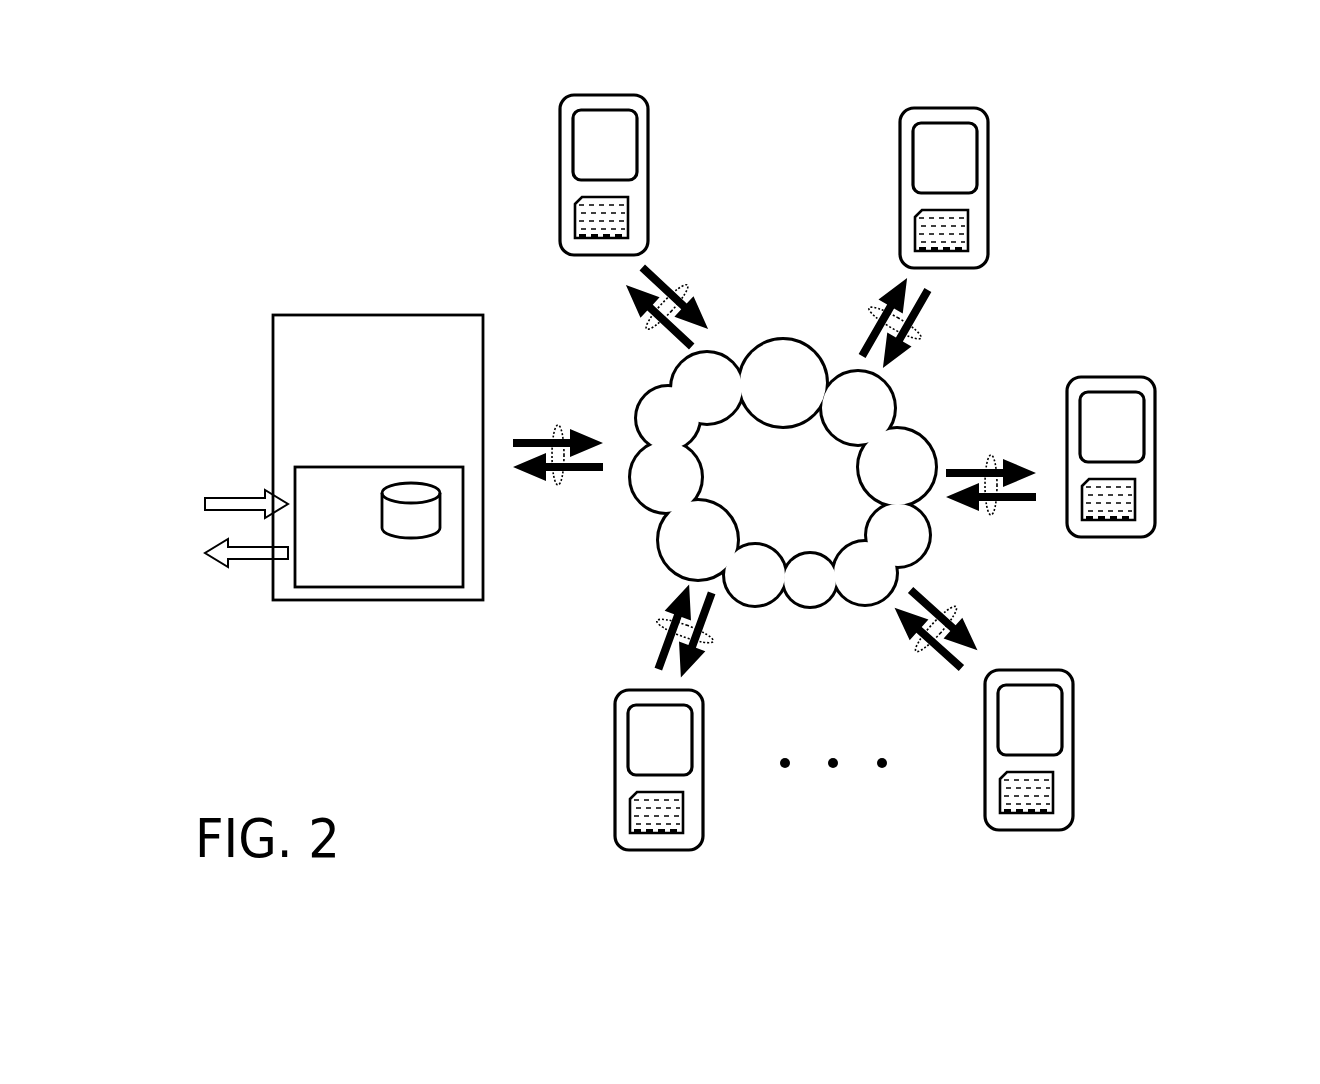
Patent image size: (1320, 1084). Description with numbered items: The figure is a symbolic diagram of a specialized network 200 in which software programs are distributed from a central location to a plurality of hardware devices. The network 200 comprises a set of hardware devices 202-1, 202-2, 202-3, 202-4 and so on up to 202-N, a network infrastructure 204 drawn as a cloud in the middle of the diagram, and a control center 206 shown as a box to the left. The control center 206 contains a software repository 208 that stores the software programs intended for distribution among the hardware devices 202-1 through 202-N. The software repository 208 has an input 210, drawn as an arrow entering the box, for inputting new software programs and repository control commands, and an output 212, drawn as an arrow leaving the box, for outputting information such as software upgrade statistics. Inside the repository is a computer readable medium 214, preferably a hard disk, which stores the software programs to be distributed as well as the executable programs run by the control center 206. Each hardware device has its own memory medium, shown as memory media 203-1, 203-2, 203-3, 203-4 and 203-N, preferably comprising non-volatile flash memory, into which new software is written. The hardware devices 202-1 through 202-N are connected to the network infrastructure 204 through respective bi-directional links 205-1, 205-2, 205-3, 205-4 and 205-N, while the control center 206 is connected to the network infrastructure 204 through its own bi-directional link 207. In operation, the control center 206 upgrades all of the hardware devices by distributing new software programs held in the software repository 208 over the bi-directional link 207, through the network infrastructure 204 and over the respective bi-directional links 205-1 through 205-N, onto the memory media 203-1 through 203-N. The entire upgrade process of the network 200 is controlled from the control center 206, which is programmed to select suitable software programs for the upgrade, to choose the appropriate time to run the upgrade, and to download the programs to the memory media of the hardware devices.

The network 200 is at (1136, 164).
The hardware device 202-1 is at (560, 133).
The hardware device 202-2 is at (900, 143).
The hardware device 202-3 is at (1137, 378).
The hardware device 202-4 is at (1062, 676).
The hardware device 202-N is at (615, 728).
The memory medium 203-1 is at (575, 224).
The memory medium 203-2 is at (915, 236).
The memory medium 203-3 is at (1133, 483).
The memory medium 203-4 is at (1053, 796).
The memory medium 203-N is at (630, 808).
The network infrastructure 204 is at (789, 428).
The bi-directional link 205-1 is at (643, 306).
The bi-directional link 205-2 is at (868, 323).
The bi-directional link 205-3 is at (991, 469).
The bi-directional link 205-4 is at (912, 629).
The bi-directional link 205-N is at (652, 630).
The control center 206 is at (273, 354).
The bi-directional link 207 is at (558, 439).
The software repository 208 is at (357, 513).
The input 210 is at (219, 504).
The output 212 is at (219, 554).
The computer readable medium 214 is at (440, 508).